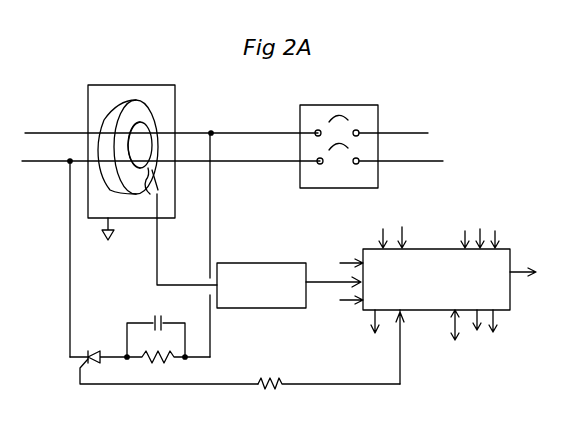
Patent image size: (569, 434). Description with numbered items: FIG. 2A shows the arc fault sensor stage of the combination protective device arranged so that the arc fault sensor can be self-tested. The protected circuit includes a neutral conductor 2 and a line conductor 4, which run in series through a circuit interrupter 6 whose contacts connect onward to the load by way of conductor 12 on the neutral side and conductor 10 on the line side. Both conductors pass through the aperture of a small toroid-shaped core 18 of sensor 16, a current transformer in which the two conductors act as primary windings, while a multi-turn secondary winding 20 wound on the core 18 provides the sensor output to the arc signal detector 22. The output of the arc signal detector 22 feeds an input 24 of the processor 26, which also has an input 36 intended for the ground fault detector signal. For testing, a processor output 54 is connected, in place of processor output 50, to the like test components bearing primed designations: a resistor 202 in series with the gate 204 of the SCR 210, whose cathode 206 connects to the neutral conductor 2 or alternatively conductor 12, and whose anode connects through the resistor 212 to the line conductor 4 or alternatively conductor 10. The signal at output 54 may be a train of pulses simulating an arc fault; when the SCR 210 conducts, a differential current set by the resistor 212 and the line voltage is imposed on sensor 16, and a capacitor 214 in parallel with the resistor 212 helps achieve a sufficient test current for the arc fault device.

The neutral conductor 2 is at (53, 168).
The line conductor 4 is at (46, 130).
The circuit interrupter 6 is at (353, 104).
The conductor 10 is at (400, 130).
The conductor 12 is at (410, 164).
The sensor 16 is at (152, 167).
The core 18 is at (152, 116).
The multi-turn secondary winding 20 is at (162, 193).
The arc signal detector 22 is at (265, 262).
The input 24 is at (333, 275).
The processor 26 is at (430, 260).
The input 36 is at (344, 283).
The processor output 50 is at (363, 322).
The processor output 54 is at (407, 324).
The resistor 202 is at (265, 392).
The gate 204 is at (70, 380).
The cathode 206 is at (64, 326).
The SCR 210 is at (97, 350).
The resistor 212 is at (141, 368).
The capacitor 214 is at (168, 316).